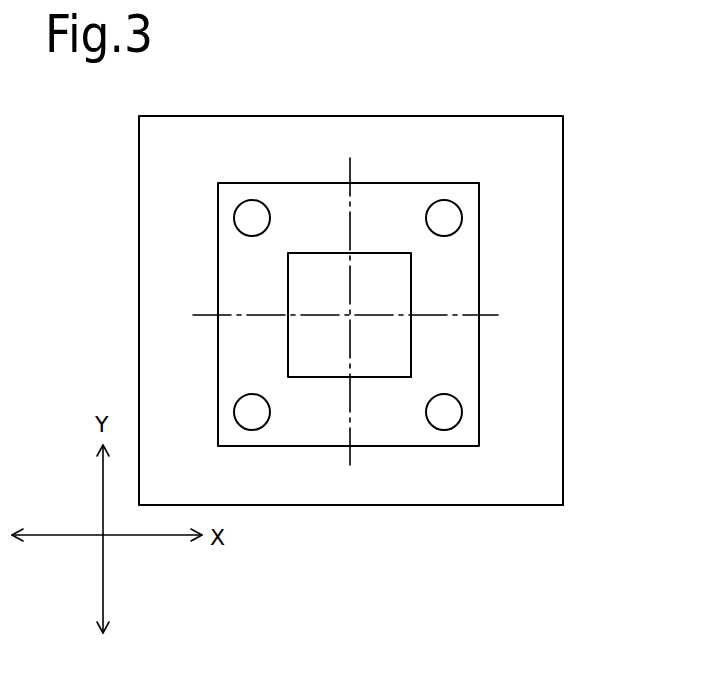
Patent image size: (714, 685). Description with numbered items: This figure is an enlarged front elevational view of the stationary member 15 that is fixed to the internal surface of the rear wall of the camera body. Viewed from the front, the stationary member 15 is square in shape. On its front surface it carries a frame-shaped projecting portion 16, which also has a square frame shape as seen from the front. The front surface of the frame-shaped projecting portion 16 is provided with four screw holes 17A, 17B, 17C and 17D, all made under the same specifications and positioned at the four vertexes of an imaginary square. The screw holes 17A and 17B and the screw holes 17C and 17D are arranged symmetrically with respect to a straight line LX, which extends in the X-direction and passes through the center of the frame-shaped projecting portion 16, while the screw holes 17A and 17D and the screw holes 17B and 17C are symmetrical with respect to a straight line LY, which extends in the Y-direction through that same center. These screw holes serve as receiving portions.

The stationary member 15 is at (522, 212).
The frame-shaped projecting portion 16 is at (438, 352).
The screw hole 17A is at (457, 212).
The screw hole 17B is at (448, 422).
The screw hole 17C is at (243, 413).
The screw hole 17D is at (245, 208).
The straight line LX is at (445, 313).
The straight line LY is at (348, 407).